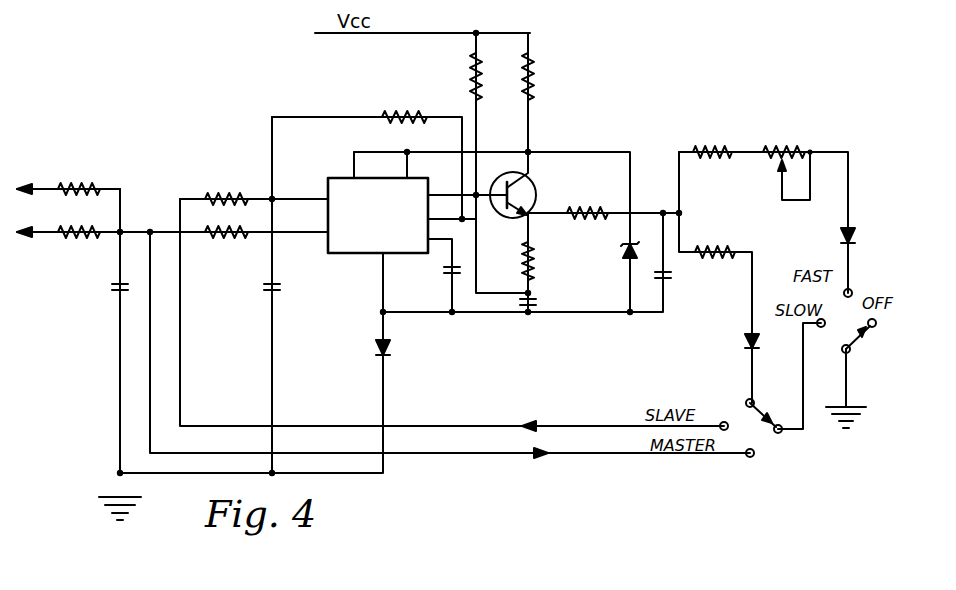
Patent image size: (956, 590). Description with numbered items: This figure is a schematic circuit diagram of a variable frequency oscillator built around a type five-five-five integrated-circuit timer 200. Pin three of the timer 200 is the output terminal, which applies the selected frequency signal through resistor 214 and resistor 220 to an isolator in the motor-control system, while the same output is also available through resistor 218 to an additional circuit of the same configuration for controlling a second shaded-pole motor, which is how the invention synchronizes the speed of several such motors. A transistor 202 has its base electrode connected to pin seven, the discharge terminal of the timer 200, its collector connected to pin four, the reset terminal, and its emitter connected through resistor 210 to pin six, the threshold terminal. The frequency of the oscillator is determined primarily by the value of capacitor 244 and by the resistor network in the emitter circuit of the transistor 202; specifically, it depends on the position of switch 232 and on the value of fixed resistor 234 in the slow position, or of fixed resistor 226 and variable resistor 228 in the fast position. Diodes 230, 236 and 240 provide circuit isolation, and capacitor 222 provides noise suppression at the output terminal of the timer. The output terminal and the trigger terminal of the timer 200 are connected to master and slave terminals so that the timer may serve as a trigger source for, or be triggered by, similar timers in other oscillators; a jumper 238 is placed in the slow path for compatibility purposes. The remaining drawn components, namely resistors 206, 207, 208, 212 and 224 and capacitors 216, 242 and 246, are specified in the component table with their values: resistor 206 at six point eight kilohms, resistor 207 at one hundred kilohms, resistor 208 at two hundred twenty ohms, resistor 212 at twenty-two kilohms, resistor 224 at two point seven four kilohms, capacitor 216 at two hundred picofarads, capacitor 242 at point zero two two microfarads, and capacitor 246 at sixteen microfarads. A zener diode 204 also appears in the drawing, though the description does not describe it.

The integrated-circuit timer 200 is at (372, 256).
The transistor 202 is at (529, 175).
The zener diode 204 is at (640, 238).
The resistor 206 is at (472, 66).
The resistor 207 is at (410, 114).
The resistor 208 is at (538, 63).
The resistor 210 is at (535, 250).
The resistor 212 is at (243, 168).
The resistor 214 is at (240, 238).
The capacitor 216 is at (282, 292).
The resistor 218 is at (88, 183).
The resistor 220 is at (100, 239).
The capacitor 222 is at (112, 290).
The resistor 224 is at (613, 187).
The fixed resistor 226 is at (722, 142).
The variable resistor 228 is at (784, 160).
The diode 230 is at (845, 238).
The switch 232 is at (850, 352).
The fixed resistor 234 is at (733, 228).
The diode 236 is at (748, 340).
The jumper 238 is at (766, 425).
The diode 240 is at (392, 347).
The capacitor 242 is at (439, 279).
The capacitor 244 is at (543, 308).
The capacitor 246 is at (690, 290).